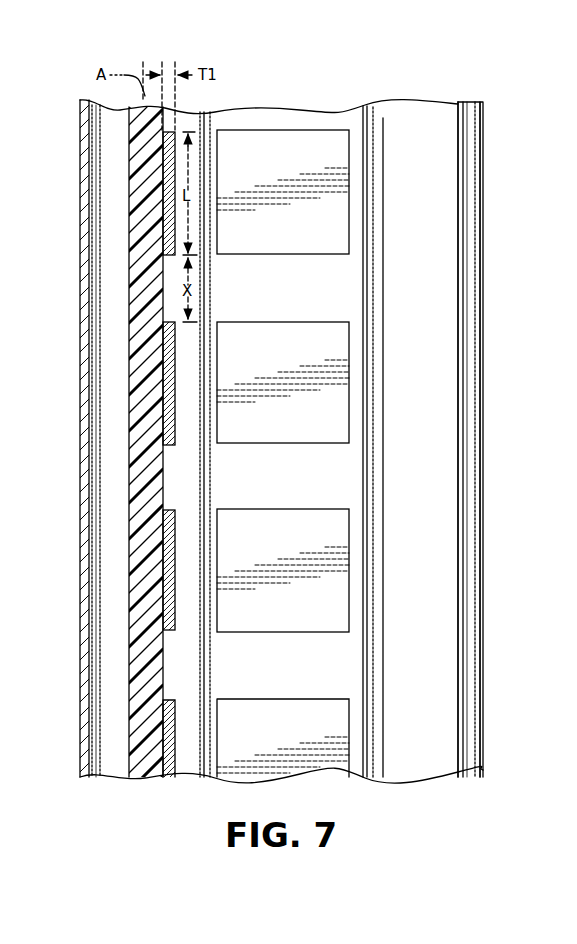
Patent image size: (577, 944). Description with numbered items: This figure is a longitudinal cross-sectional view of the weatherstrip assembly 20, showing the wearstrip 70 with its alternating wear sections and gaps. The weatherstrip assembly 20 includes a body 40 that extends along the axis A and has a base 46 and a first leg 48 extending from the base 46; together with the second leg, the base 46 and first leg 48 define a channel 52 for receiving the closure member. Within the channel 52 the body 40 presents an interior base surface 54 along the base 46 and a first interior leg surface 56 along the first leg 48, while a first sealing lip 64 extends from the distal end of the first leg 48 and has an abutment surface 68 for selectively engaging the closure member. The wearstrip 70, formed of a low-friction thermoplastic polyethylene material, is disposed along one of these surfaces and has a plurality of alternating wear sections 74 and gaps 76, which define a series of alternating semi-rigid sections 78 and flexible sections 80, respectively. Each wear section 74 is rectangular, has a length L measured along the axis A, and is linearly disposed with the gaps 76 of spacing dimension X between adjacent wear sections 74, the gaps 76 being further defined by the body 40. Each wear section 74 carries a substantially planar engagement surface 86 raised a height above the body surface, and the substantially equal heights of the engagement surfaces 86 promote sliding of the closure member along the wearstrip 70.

The weatherstrip assembly 20 is at (488, 86).
The body 40 is at (120, 112).
The base 46 is at (135, 762).
The first leg 48 is at (350, 112).
The channel 52 is at (302, 112).
The interior base surface 54 is at (168, 480).
The first interior leg surface 56 is at (355, 758).
The first sealing lip 64 is at (443, 122).
The abutment surface 68 is at (443, 180).
The wearstrip 70 is at (140, 185).
The wear sections 74 is at (160, 214).
The gaps 76 is at (336, 270).
The semi-rigid sections 78 is at (160, 165).
The flexible sections 80 is at (336, 300).
The engagement surface 86 is at (268, 143).